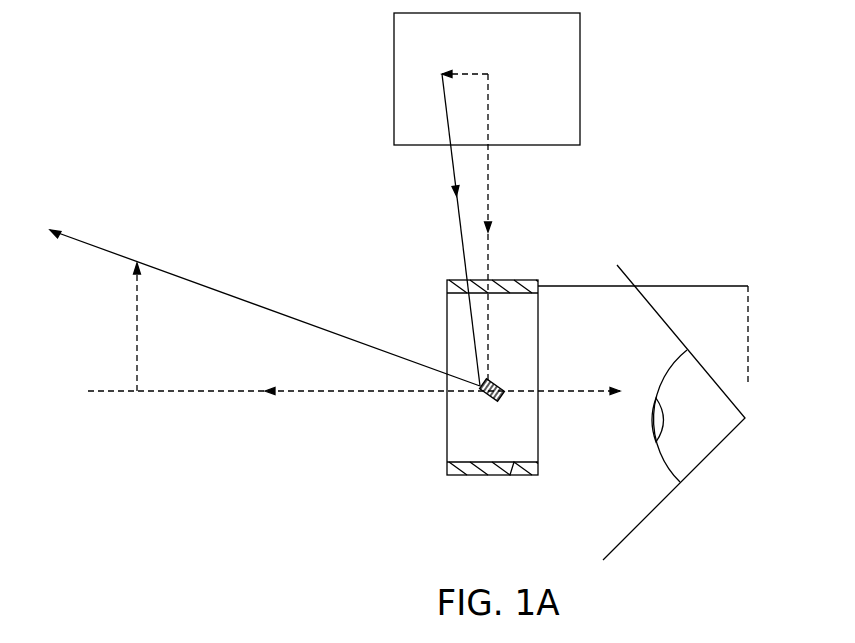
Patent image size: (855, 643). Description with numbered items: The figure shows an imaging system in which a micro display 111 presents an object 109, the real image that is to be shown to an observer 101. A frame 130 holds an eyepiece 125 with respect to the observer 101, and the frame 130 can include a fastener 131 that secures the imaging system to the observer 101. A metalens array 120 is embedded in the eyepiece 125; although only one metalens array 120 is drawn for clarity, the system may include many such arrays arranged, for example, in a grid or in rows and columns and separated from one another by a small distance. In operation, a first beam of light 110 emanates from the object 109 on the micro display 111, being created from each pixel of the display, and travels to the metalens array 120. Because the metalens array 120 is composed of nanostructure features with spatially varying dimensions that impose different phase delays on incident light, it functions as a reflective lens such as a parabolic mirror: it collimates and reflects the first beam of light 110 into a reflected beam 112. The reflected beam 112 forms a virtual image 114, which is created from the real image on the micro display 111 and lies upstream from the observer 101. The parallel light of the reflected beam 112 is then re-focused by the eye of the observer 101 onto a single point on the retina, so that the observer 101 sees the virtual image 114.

The observer 101 is at (708, 457).
The object 109 is at (473, 72).
The first beam of light 110 is at (490, 190).
The micro display 111 is at (582, 77).
The reflected beam 112 is at (567, 393).
The virtual image 114 is at (137, 338).
The metalens array 120 is at (505, 402).
The eyepiece 125 is at (517, 320).
The frame 130 is at (557, 286).
The fastener 131 is at (718, 284).